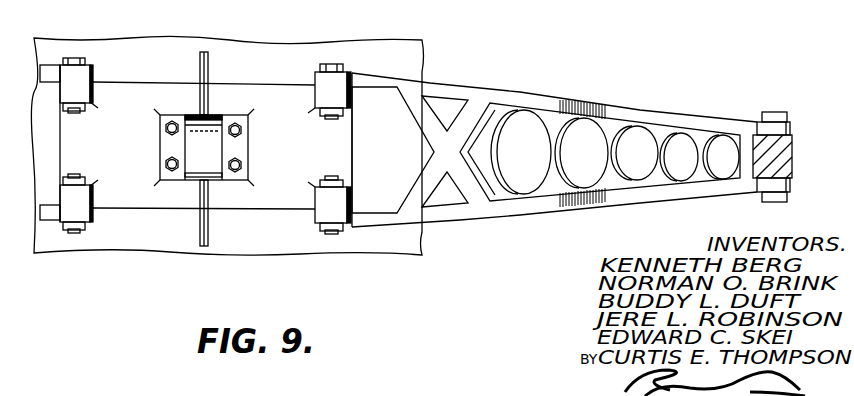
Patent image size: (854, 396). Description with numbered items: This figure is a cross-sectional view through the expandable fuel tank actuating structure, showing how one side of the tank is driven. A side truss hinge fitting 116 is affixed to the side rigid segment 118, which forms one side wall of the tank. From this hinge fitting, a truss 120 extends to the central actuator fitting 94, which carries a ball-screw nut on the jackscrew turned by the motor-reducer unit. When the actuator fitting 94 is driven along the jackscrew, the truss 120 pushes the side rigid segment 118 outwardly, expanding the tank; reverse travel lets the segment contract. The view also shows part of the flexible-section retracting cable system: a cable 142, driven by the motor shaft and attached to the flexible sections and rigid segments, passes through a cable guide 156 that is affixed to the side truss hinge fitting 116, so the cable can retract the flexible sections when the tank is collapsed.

The central actuator fitting 94 is at (783, 167).
The side truss hinge fitting 116 is at (237, 200).
The side rigid segment 118 is at (387, 245).
The truss 120 is at (643, 118).
The cable 142 is at (203, 243).
The cable guide 156 is at (213, 155).